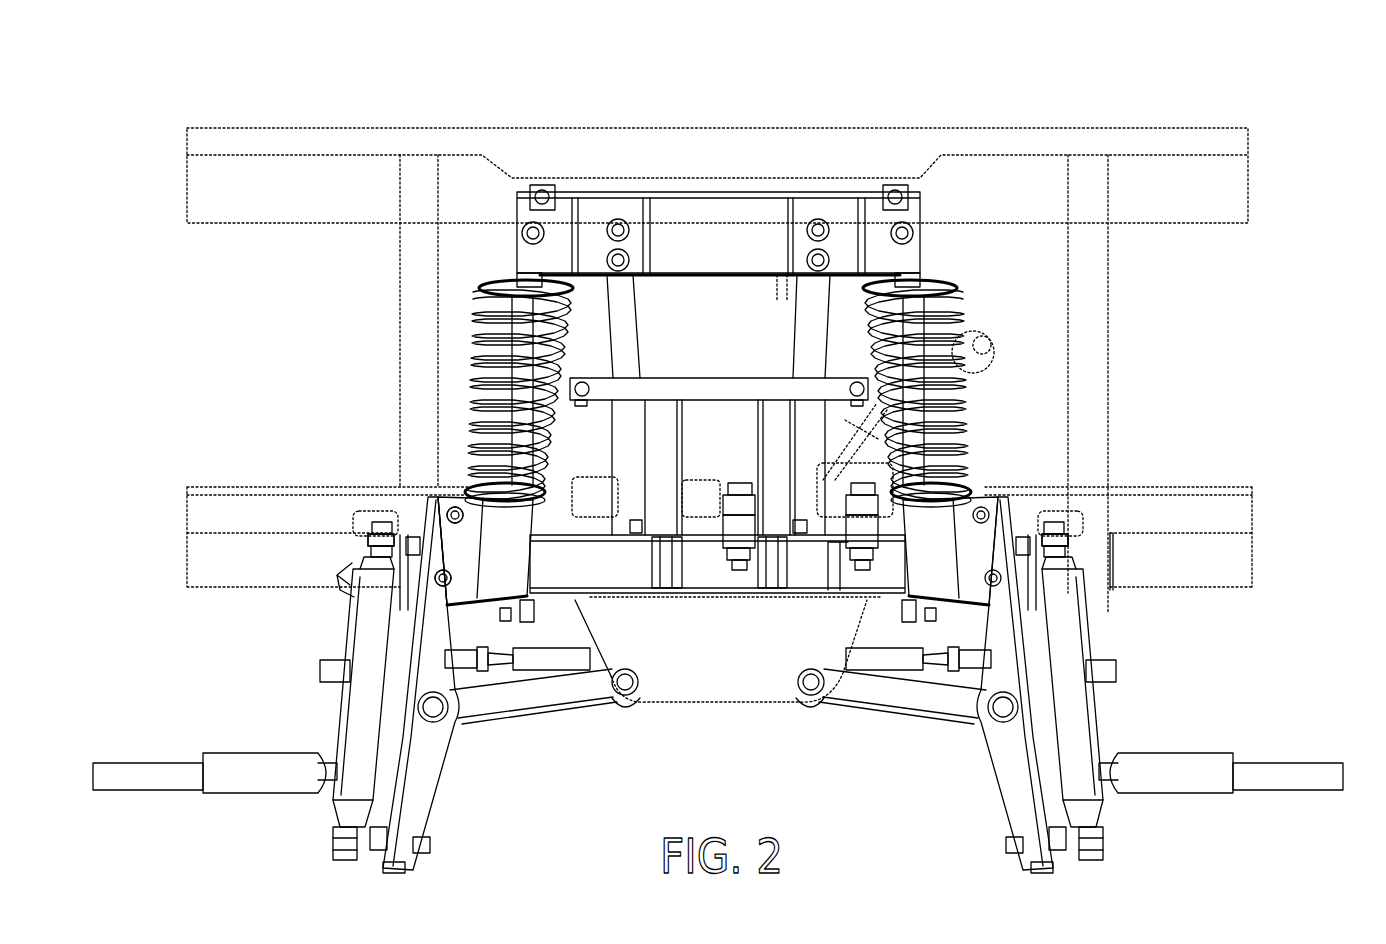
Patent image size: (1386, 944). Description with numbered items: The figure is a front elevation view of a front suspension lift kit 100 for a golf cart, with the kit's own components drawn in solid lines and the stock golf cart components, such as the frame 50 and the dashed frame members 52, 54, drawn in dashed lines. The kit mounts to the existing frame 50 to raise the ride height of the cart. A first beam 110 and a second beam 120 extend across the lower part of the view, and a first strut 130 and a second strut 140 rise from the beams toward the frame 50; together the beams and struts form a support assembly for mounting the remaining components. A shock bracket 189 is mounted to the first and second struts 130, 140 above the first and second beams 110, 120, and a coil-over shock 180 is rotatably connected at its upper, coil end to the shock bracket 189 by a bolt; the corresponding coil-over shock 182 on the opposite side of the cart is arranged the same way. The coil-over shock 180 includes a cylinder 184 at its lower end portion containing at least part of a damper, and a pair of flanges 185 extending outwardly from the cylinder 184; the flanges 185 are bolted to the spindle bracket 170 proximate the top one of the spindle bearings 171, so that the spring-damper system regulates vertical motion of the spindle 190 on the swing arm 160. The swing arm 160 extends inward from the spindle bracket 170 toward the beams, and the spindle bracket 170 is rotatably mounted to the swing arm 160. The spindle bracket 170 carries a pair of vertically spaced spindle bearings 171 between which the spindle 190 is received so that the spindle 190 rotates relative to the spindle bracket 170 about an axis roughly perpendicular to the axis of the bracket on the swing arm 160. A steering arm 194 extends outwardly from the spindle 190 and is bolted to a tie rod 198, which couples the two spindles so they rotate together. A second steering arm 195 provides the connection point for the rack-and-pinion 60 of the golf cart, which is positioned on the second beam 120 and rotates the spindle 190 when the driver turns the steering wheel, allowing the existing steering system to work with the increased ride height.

The front suspension lift kit 100 is at (1118, 92).
The frame 50 is at (1093, 352).
The lower frame rail 52 is at (1188, 512).
The upper frame rail 54 is at (1183, 203).
The rack-and-pinion 60 is at (736, 478).
The first beam 110 is at (605, 567).
The second beam 120 is at (798, 577).
The first strut 130 is at (628, 295).
The second strut 140 is at (812, 350).
The swing arm 160 is at (523, 700).
The spindle bracket 170 is at (410, 797).
The spindle bearings 171 is at (365, 543).
The coil-over shock 180 is at (482, 352).
The coil spring shock absorber 182 is at (950, 297).
The cylinder 184 is at (505, 548).
The flanges 185 is at (457, 550).
The shock bracket 189 is at (720, 212).
The spindle 190 is at (355, 722).
The steering arm 194 is at (330, 671).
The second steering arm 195 is at (345, 590).
The tie rod 198 is at (865, 662).